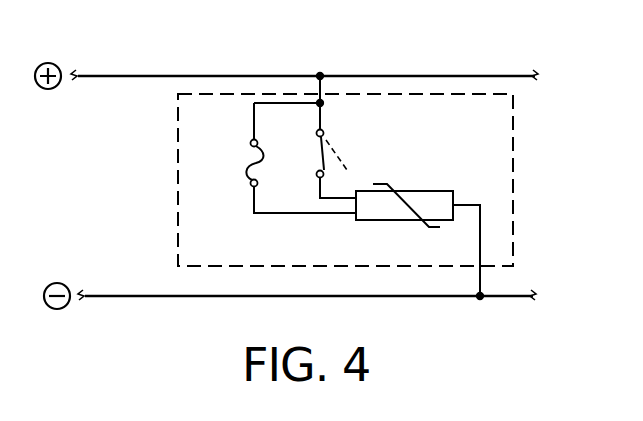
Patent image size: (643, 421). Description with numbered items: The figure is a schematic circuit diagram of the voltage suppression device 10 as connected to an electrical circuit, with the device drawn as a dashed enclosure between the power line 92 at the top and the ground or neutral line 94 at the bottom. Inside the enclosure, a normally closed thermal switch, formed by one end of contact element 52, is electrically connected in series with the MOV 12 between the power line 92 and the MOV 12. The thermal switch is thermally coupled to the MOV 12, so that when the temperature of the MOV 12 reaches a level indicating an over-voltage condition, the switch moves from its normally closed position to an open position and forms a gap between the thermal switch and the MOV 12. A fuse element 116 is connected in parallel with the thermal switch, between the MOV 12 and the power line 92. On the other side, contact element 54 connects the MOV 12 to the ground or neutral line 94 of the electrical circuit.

The voltage suppression device 10 is at (514, 139).
The MOV 12 is at (433, 190).
The contact element 52 is at (321, 118).
The contact element 54 is at (483, 242).
The power line 92 is at (168, 74).
The ground or neutral line 94 is at (166, 300).
The fuse element 116 is at (244, 171).